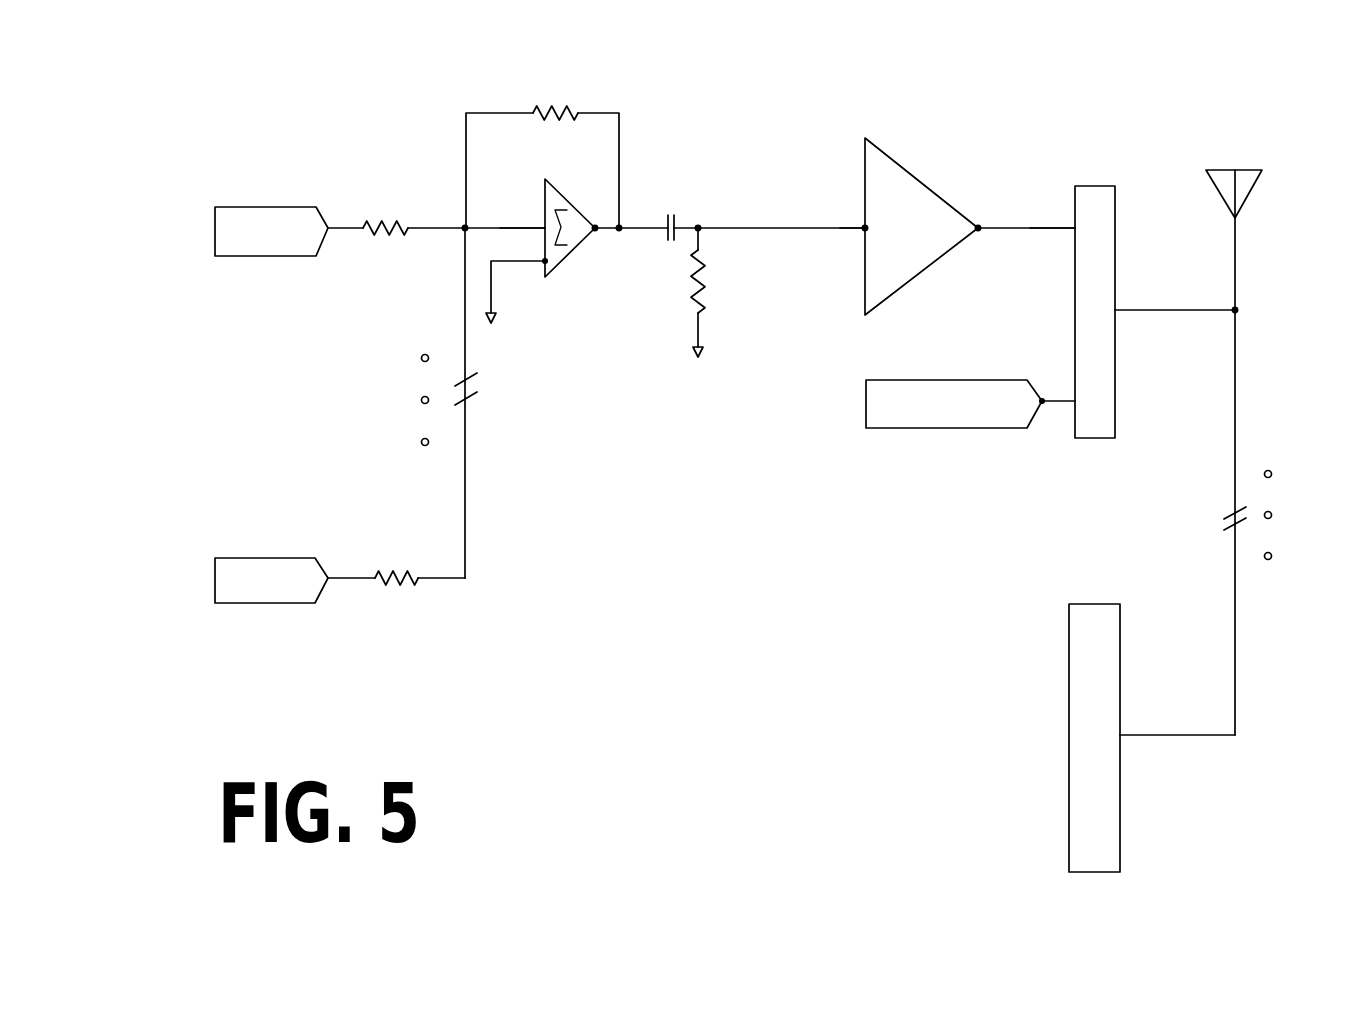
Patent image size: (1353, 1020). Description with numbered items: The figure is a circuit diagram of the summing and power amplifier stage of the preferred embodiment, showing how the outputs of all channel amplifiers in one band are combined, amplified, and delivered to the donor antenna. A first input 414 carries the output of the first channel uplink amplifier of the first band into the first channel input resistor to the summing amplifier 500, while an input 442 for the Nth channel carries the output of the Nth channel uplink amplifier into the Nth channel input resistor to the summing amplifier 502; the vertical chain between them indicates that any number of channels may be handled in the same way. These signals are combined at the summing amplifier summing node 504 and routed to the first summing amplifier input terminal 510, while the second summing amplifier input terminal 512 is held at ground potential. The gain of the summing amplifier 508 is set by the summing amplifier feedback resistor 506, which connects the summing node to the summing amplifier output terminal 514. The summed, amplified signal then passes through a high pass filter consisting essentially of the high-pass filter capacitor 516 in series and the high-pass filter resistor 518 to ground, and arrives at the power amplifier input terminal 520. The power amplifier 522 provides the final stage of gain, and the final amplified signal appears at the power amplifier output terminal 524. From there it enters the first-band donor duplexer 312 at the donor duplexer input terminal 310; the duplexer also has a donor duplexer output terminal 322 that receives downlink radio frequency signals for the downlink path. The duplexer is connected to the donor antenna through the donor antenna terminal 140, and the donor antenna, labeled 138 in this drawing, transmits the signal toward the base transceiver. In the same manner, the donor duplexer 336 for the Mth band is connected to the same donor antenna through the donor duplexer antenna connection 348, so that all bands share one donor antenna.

The input 1 414 is at (260, 197).
The input N 442 is at (273, 552).
The Channel 1 Input Resistor to Band 1 Summing Amplifier 500 is at (380, 245).
The Channel N Input Resistor to Band 1 Summing Amplifier 502 is at (392, 595).
The Band 1 Summing Amplifier Summing Node 504 is at (455, 220).
The Band 1 Summing Amplifier Feedback Resistor 506 is at (530, 100).
The Band 1 Summing Amplifier 508 is at (562, 272).
The Band 1 Summing Amplifier Input Terminal 1 510 is at (540, 220).
The Band 1 Summing Amplifier Input Terminal 2 512 is at (542, 265).
The Band 1 Summing Amplifier Output Terminal 514 is at (604, 236).
The Band 1 High-pass Filter Capacitor 516 is at (677, 212).
The Band 1 High-pass Filter Resistor 518 is at (717, 285).
The Band 1 Power Amplifier Input Terminal 520 is at (857, 220).
The Band 1 Power Amplifier 522 is at (920, 282).
The Band 1 Power Amplifier Output Terminal 524 is at (990, 215).
The Band 1 Donor Duplexer Input Terminal 310 is at (1072, 235).
The Band 1 Donor Duplexer 312 is at (1098, 182).
The Band 1 Donor Duplexer Output Terminal 322 is at (1070, 415).
The Donor Antenna Terminal 140 is at (1125, 325).
The On/Off Switch 138 is at (1257, 195).
The Band M Donor Duplexer 336 is at (1088, 595).
The Band M Donor Duplexer Antenna Connection 348 is at (1128, 750).